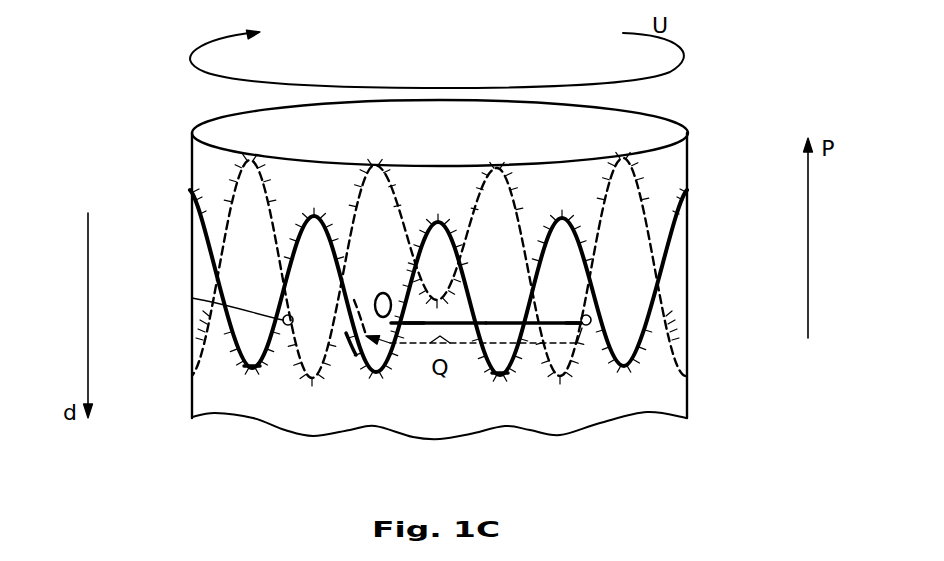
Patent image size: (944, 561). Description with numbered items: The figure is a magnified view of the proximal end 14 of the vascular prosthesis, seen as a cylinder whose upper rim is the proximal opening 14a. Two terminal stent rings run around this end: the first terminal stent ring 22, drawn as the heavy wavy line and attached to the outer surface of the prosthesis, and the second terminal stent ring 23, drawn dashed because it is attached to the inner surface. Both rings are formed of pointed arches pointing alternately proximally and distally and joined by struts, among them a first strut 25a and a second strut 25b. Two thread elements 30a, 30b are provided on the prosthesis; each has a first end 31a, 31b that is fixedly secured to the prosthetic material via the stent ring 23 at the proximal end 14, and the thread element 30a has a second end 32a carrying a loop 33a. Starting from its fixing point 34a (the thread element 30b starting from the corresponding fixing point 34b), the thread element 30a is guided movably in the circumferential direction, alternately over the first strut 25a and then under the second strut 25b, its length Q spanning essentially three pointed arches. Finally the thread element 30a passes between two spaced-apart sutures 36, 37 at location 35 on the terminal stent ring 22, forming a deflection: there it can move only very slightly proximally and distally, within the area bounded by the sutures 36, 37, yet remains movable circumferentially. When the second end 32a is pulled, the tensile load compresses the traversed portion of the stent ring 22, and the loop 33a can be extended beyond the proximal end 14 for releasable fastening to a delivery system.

The proximal end 14 is at (704, 161).
The proximal opening 14a is at (520, 122).
The first terminal stent ring 22 is at (216, 245).
The second terminal stent ring 23 is at (232, 188).
The first strut 25a is at (539, 326).
The second strut 25b is at (464, 328).
The thread element 30a is at (494, 320).
The thread element 30b is at (250, 308).
The first end 31a is at (614, 315).
The first end 31b is at (262, 327).
The second end 32a is at (389, 273).
The loop 33a is at (378, 292).
The fixing point 34a is at (587, 328).
The fixing point 34b is at (288, 328).
The location 35 is at (352, 350).
The suture 36 is at (360, 360).
The suture 37 is at (414, 328).